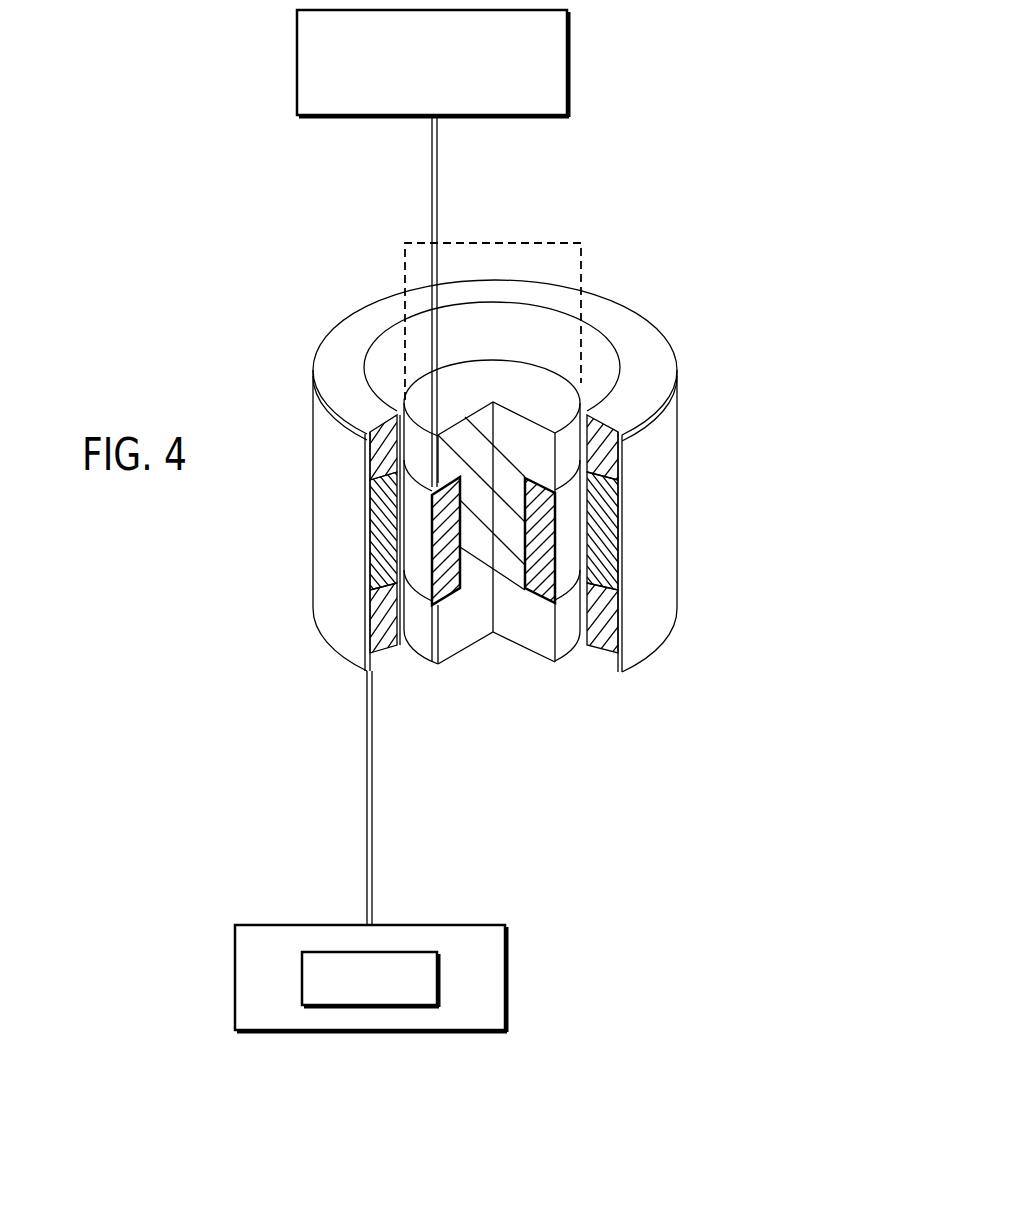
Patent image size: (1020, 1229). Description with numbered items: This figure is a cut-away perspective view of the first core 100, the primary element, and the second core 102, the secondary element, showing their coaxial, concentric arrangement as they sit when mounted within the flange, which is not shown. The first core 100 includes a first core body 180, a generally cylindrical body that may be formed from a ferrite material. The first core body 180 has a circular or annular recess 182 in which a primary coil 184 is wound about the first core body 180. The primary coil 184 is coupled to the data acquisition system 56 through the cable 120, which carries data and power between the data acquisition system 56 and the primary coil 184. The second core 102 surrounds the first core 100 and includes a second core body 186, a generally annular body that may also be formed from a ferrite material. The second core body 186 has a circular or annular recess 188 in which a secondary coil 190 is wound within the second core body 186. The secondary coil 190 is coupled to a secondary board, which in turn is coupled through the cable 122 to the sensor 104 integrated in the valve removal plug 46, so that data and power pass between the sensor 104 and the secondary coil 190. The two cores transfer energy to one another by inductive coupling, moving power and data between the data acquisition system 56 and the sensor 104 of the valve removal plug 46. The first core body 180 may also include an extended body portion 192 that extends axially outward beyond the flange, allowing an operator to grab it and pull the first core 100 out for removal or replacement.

The valve removal plug 46 is at (334, 1015).
The data acquisition system 56 is at (567, 62).
The first core 100 is at (550, 492).
The second core 102 is at (670, 283).
The sensor 104 is at (368, 1005).
The cable 120 is at (437, 187).
The cable 122 is at (368, 800).
The first core body 180 is at (510, 437).
The annular recess 182 is at (462, 572).
The primary coil 184 is at (447, 553).
The second core body 186 is at (650, 518).
The annular recess 188 is at (620, 553).
The secondary coil 190 is at (600, 572).
The extended body portion 192 is at (405, 268).